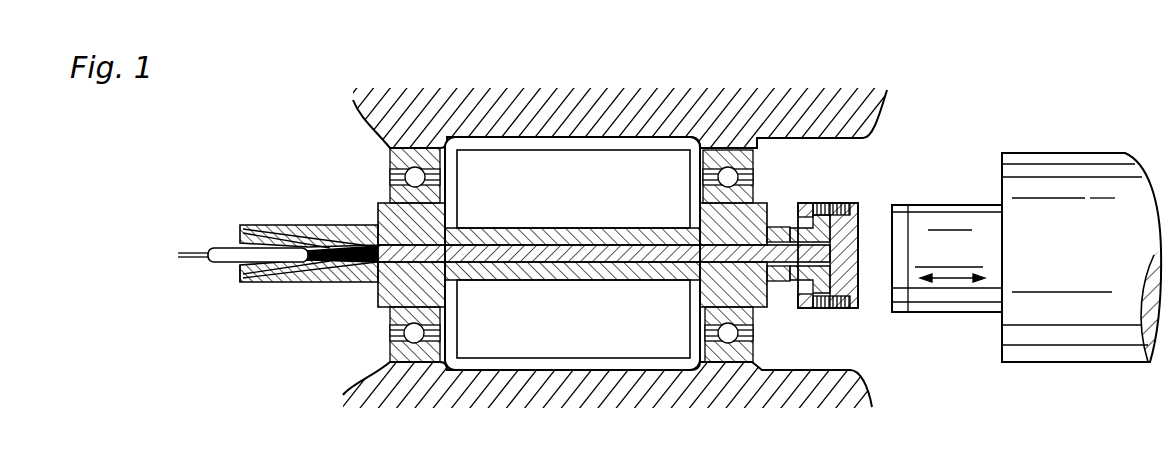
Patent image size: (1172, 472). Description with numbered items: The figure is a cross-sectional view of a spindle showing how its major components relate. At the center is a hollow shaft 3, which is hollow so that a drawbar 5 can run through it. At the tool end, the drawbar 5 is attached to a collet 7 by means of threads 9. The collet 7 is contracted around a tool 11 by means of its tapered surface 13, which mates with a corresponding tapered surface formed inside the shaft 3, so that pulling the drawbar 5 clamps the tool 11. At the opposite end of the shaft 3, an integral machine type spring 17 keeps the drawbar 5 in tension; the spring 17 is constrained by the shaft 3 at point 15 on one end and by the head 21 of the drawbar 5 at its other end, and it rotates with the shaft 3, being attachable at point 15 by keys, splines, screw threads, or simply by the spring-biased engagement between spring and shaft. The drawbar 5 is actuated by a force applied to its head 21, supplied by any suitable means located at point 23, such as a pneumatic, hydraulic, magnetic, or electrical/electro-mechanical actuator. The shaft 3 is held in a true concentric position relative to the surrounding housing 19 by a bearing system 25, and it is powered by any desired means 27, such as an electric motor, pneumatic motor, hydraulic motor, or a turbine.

The shaft 3 is at (396, 293).
The drawbar 5 is at (600, 245).
The collet 7 is at (240, 267).
The threads 9 is at (332, 247).
The tool 11 is at (222, 252).
The tapered surface 13 is at (311, 283).
The point 15 is at (769, 227).
The integral machine type spring 17 is at (822, 203).
The housing 19 is at (603, 102).
The head 21 is at (843, 258).
The point 23 is at (964, 265).
The bearing system 25 is at (392, 345).
The means 27 is at (576, 200).